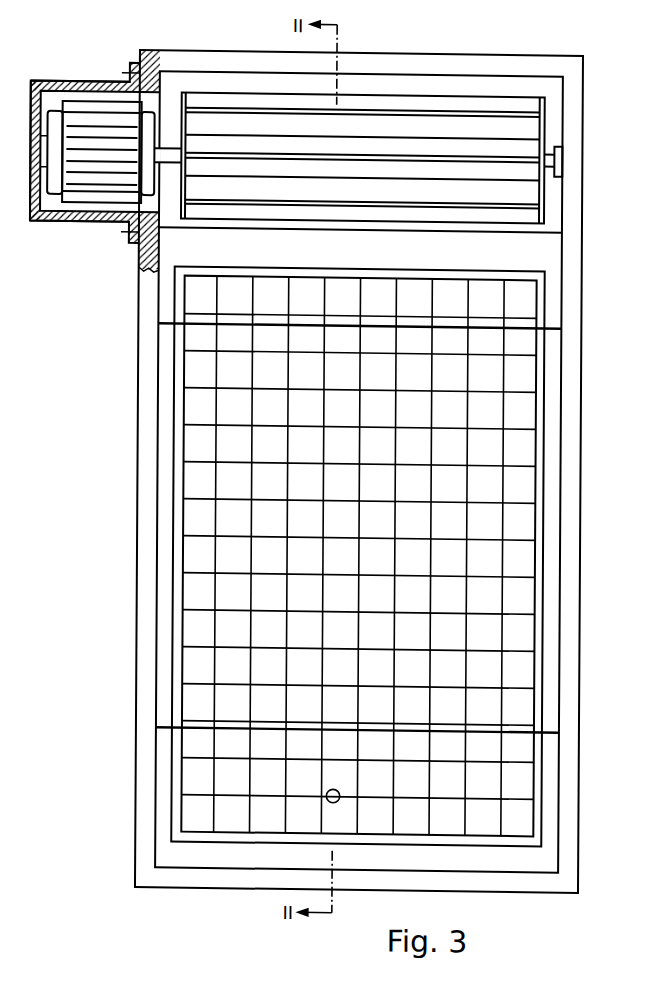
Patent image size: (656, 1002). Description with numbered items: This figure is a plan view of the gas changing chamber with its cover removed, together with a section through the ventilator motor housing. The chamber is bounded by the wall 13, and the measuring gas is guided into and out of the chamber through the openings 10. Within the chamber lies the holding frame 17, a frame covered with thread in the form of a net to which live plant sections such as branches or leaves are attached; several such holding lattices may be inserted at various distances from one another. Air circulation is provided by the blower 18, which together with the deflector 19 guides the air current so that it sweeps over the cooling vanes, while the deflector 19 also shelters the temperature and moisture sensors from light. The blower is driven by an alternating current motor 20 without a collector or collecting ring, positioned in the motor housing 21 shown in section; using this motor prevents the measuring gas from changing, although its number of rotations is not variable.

The openings 10 is at (339, 800).
The wall 13 is at (483, 878).
The holding frame 17 is at (181, 784).
The blower 18 is at (482, 98).
The deflector 19 is at (548, 252).
The alternating current motor 20 is at (98, 188).
The motor housing 21 is at (59, 218).